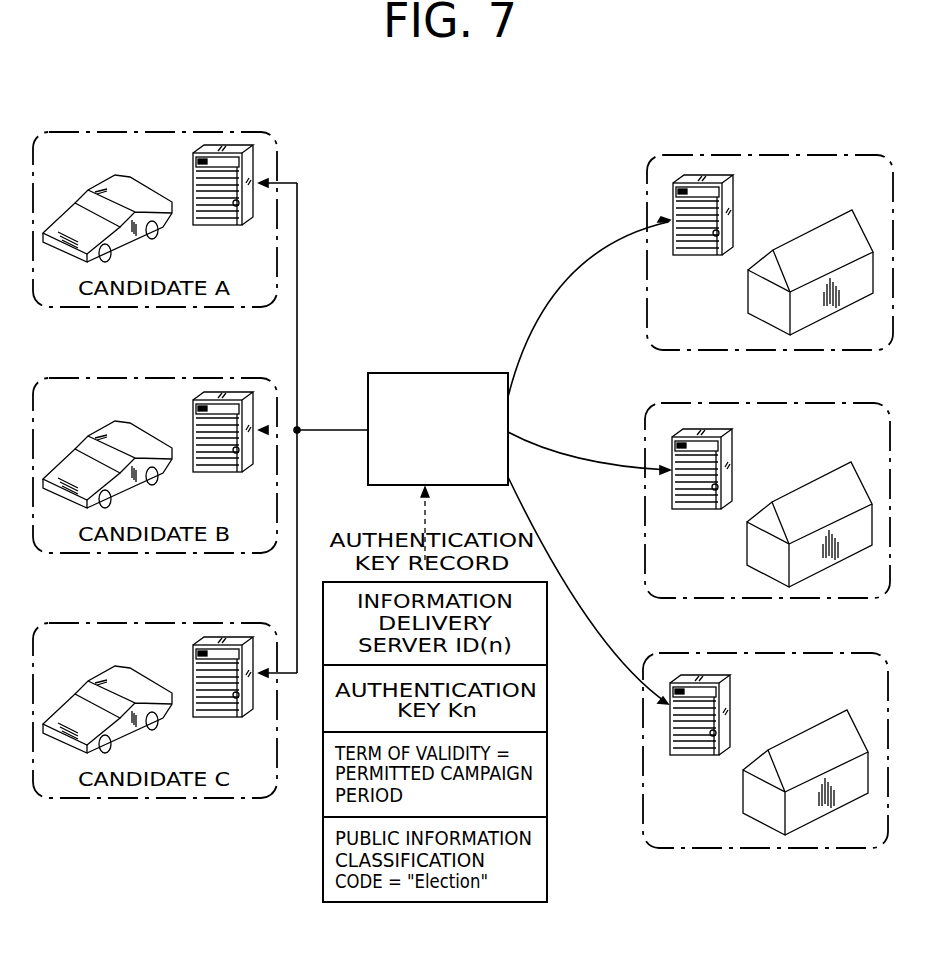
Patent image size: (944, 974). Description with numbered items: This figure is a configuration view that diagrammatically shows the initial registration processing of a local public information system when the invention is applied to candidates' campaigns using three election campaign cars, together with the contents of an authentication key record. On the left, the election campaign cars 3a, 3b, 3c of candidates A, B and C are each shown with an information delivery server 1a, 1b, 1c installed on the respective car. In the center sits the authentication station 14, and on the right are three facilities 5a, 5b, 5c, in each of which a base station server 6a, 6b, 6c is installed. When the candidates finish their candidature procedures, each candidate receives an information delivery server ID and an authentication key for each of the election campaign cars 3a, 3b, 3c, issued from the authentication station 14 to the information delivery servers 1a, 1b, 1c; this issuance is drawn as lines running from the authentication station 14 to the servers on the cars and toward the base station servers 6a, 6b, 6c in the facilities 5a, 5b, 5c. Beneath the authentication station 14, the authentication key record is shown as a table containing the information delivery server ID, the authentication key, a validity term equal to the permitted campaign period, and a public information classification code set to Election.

The information delivery server 1a is at (227, 147).
The information delivery server 1b is at (227, 392).
The information delivery server 1c is at (227, 637).
The election campaign car 3a is at (110, 178).
The election campaign car 3b is at (110, 424).
The election campaign car 3c is at (110, 671).
The facility 5a is at (747, 293).
The facility 5b is at (747, 543).
The facility 5c is at (742, 792).
The base station server 6a is at (735, 197).
The base station server 6b is at (733, 447).
The base station server 6c is at (733, 697).
The authentication station 14 is at (437, 373).